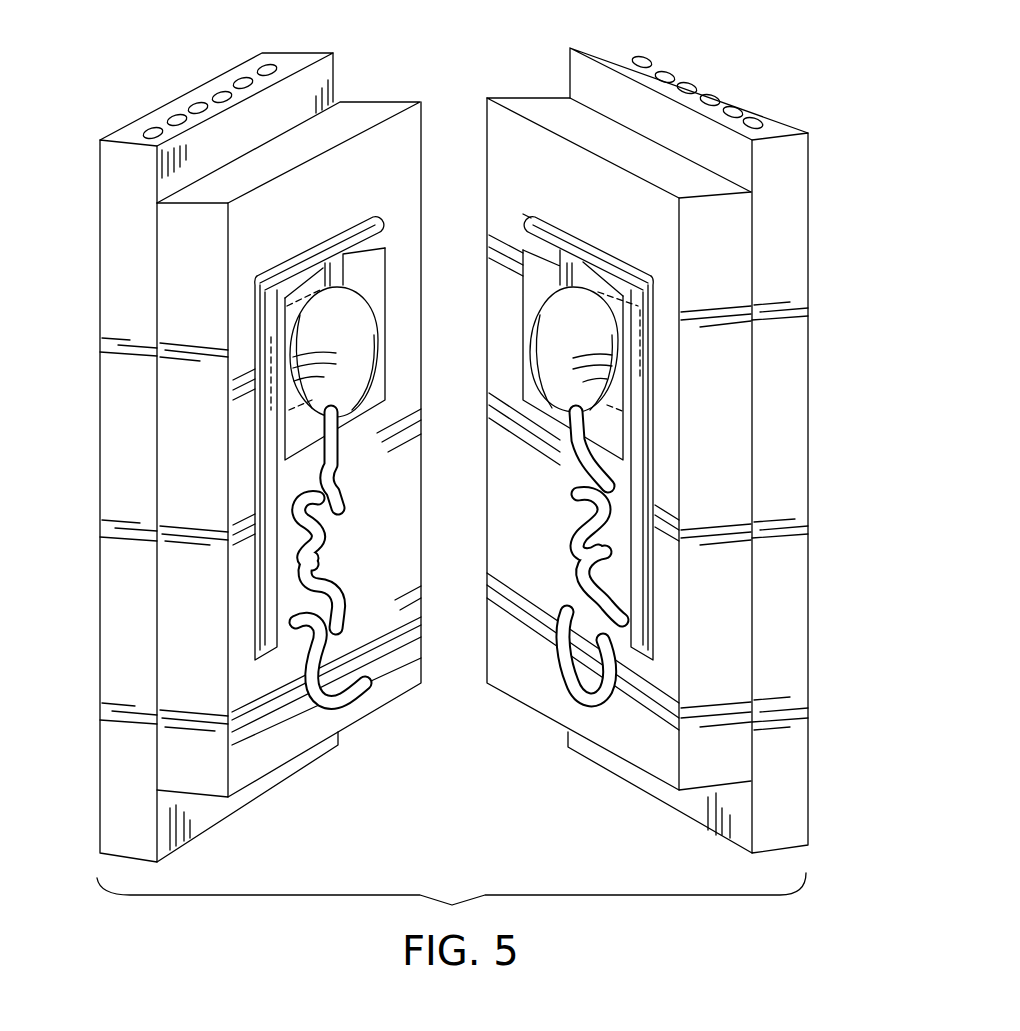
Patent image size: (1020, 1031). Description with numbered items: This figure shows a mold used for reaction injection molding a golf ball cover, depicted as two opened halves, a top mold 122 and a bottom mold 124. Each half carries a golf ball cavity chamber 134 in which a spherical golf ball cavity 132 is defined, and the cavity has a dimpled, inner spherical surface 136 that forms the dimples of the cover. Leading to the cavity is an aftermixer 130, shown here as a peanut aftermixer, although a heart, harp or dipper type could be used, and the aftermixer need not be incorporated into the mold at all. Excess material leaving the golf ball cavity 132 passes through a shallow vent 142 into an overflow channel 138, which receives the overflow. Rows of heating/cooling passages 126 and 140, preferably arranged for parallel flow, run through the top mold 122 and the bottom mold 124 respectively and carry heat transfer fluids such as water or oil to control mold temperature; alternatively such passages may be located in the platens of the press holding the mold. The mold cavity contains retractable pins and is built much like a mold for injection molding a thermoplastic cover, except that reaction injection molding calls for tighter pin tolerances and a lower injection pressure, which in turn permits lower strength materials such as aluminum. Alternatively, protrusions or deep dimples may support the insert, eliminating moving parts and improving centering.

The top mold 122 is at (130, 405).
The bottom mold 124 is at (797, 598).
The heating/cooling passages 126 is at (220, 96).
The aftermixer 130 is at (568, 524).
The golf ball cavity 132 is at (288, 330).
The golf ball cavity chamber 134 is at (290, 445).
The dimpled, inner spherical surface 136 is at (372, 342).
The overflow channel 138 is at (523, 214).
The heating/cooling passages 140 is at (750, 98).
The shallow vent 142 is at (335, 265).